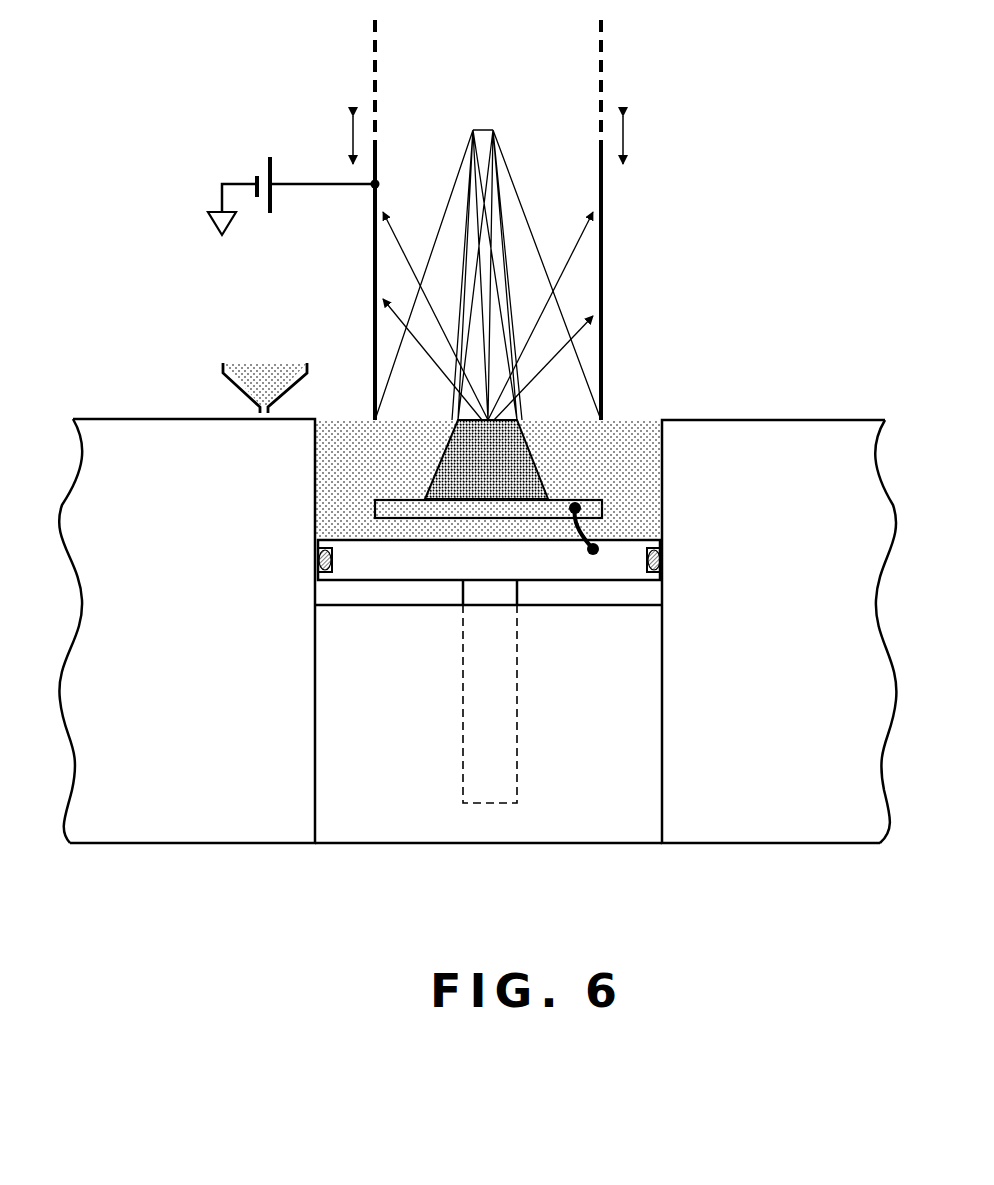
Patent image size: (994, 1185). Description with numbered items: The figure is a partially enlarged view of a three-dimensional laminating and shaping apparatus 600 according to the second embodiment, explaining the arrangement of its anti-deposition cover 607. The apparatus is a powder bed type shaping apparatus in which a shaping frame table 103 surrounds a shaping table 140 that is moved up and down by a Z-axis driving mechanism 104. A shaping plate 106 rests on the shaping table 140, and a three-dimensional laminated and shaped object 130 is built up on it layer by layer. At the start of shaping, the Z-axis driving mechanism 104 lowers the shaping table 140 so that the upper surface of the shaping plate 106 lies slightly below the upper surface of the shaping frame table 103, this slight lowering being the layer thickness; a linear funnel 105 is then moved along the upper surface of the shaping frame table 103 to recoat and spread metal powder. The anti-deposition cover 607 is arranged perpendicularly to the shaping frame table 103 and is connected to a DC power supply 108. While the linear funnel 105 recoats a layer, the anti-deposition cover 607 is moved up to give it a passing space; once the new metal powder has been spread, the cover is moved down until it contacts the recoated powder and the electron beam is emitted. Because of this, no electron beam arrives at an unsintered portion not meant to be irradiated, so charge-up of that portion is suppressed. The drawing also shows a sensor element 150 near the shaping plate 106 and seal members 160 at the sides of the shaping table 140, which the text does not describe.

The three-dimensional laminating and shaping apparatus 600 is at (158, 114).
The shaping frame table 103 is at (803, 418).
The Z-axis driving mechanism 104 is at (489, 788).
The linear funnel 105 is at (237, 393).
The shaping plate 106 is at (398, 508).
The DC power supply 108 is at (270, 157).
The three-dimensional laminated and shaped object 130 is at (540, 463).
The shaping table 140 is at (547, 568).
The temperature sensor 150 is at (588, 534).
The seal member 160 is at (664, 557).
The anti-deposition cover 607 is at (602, 280).